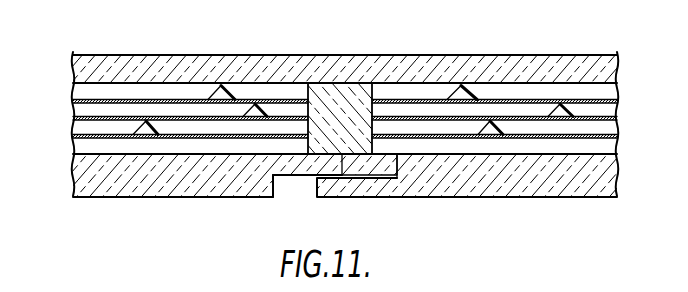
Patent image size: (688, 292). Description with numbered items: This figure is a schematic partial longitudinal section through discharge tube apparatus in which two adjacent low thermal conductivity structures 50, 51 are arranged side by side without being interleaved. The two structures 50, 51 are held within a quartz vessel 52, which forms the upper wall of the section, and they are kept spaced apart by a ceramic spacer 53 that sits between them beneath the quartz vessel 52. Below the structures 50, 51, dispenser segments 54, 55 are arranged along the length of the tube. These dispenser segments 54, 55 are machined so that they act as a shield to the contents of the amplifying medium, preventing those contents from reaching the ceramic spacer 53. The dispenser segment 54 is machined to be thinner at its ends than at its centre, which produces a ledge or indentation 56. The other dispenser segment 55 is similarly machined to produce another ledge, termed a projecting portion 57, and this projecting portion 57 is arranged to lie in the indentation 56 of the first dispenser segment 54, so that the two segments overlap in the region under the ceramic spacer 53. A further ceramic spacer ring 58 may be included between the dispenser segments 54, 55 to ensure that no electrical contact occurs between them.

The low thermal conductivity structure 50 is at (63, 87).
The low thermal conductivity structure 51 is at (626, 88).
The quartz vessel 52 is at (378, 72).
The ceramic spacer 53 is at (340, 100).
The dispenser segment 54 is at (200, 177).
The dispenser segment 55 is at (437, 177).
The indentation 56 is at (278, 181).
The projecting portion 57 is at (334, 193).
The ceramic spacer ring 58 is at (362, 165).